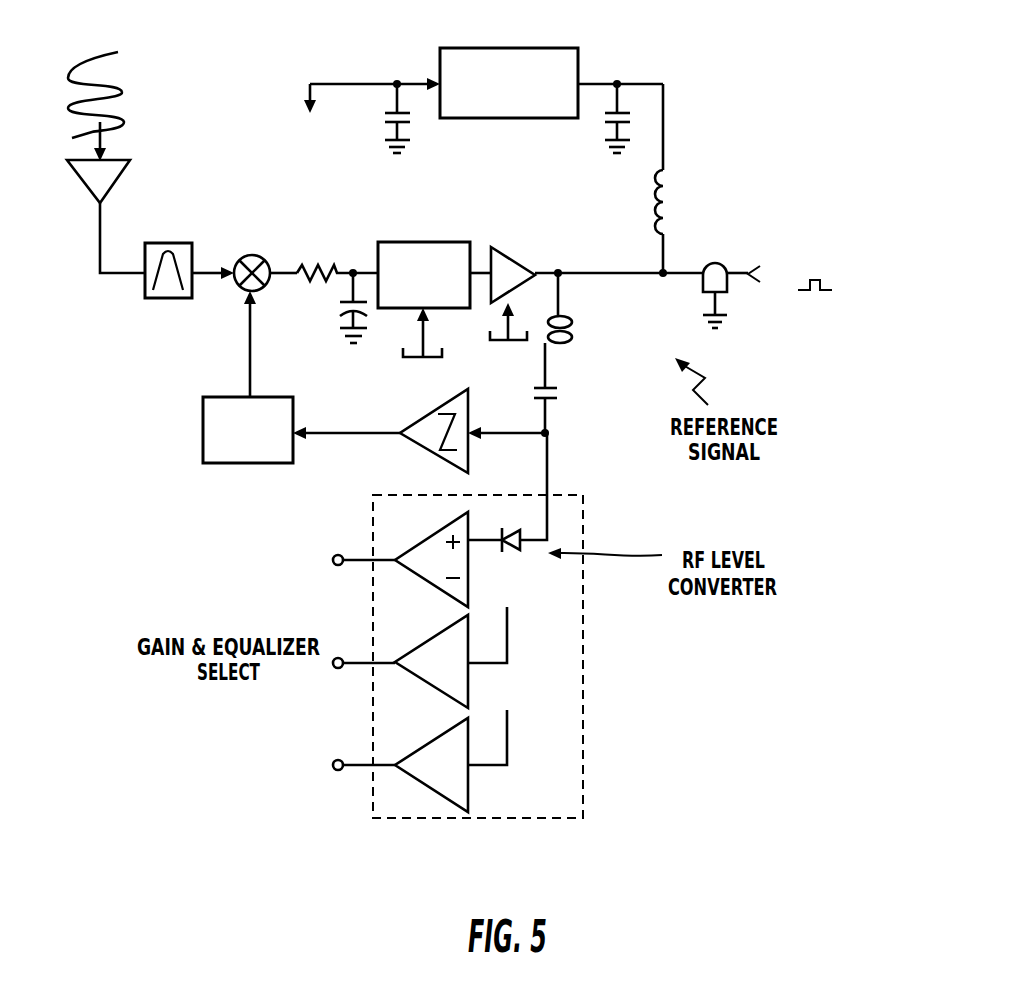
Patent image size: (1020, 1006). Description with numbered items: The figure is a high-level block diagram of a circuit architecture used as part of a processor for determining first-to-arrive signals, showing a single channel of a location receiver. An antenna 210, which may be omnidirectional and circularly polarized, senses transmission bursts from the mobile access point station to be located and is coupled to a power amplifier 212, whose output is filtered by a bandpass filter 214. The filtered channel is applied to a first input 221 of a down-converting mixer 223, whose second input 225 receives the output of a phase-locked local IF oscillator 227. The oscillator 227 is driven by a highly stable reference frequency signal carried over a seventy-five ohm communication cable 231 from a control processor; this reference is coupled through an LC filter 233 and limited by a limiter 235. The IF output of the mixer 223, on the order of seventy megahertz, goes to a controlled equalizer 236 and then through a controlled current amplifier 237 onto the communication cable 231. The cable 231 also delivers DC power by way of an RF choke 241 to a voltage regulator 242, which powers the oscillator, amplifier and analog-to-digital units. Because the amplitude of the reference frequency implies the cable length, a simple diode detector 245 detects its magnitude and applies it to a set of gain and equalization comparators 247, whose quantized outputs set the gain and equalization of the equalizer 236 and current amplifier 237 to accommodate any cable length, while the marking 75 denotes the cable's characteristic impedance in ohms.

The antenna 210 is at (123, 82).
The power amplifier 212 is at (78, 178).
The bandpass filter 214 is at (170, 298).
The first input 221 is at (238, 262).
The down-converting mixer 223 is at (248, 256).
The second input 225 is at (247, 292).
The phase-locked local IF oscillator 227 is at (203, 432).
The communication cable 231 is at (598, 270).
The LC filter 233 is at (565, 318).
The limiter 235 is at (398, 418).
The controlled equalizer 236 is at (428, 242).
The controlled current amplifier 237 is at (516, 262).
The RF choke 241 is at (655, 193).
The voltage regulator 242 is at (552, 48).
The diode detector 245 is at (518, 535).
The gain and equalization comparators 247 is at (515, 730).
The cable connector 75 is at (767, 295).